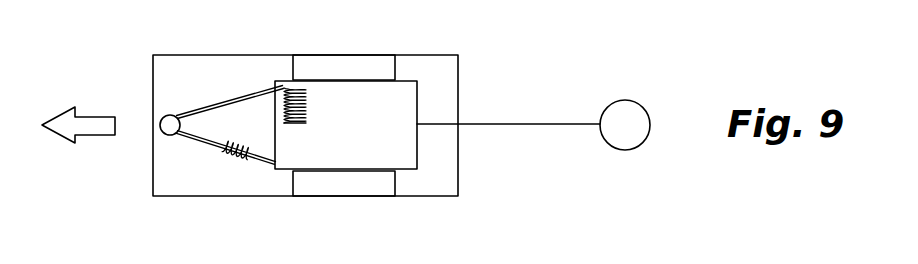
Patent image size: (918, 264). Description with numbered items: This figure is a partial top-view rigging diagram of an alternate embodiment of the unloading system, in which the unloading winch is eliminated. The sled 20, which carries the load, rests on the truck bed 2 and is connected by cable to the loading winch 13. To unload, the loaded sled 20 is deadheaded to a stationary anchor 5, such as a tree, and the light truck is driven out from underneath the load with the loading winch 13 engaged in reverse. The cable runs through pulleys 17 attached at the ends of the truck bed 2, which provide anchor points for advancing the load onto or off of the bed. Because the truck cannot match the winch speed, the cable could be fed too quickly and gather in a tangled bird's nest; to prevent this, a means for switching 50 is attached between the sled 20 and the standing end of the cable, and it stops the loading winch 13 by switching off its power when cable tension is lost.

The truck bed 2 is at (192, 54).
The stationary anchor 5 is at (631, 112).
The loading winch 13 is at (288, 80).
The pulleys 17 is at (163, 132).
The sled 20 is at (348, 67).
The means for switching 50 is at (224, 173).